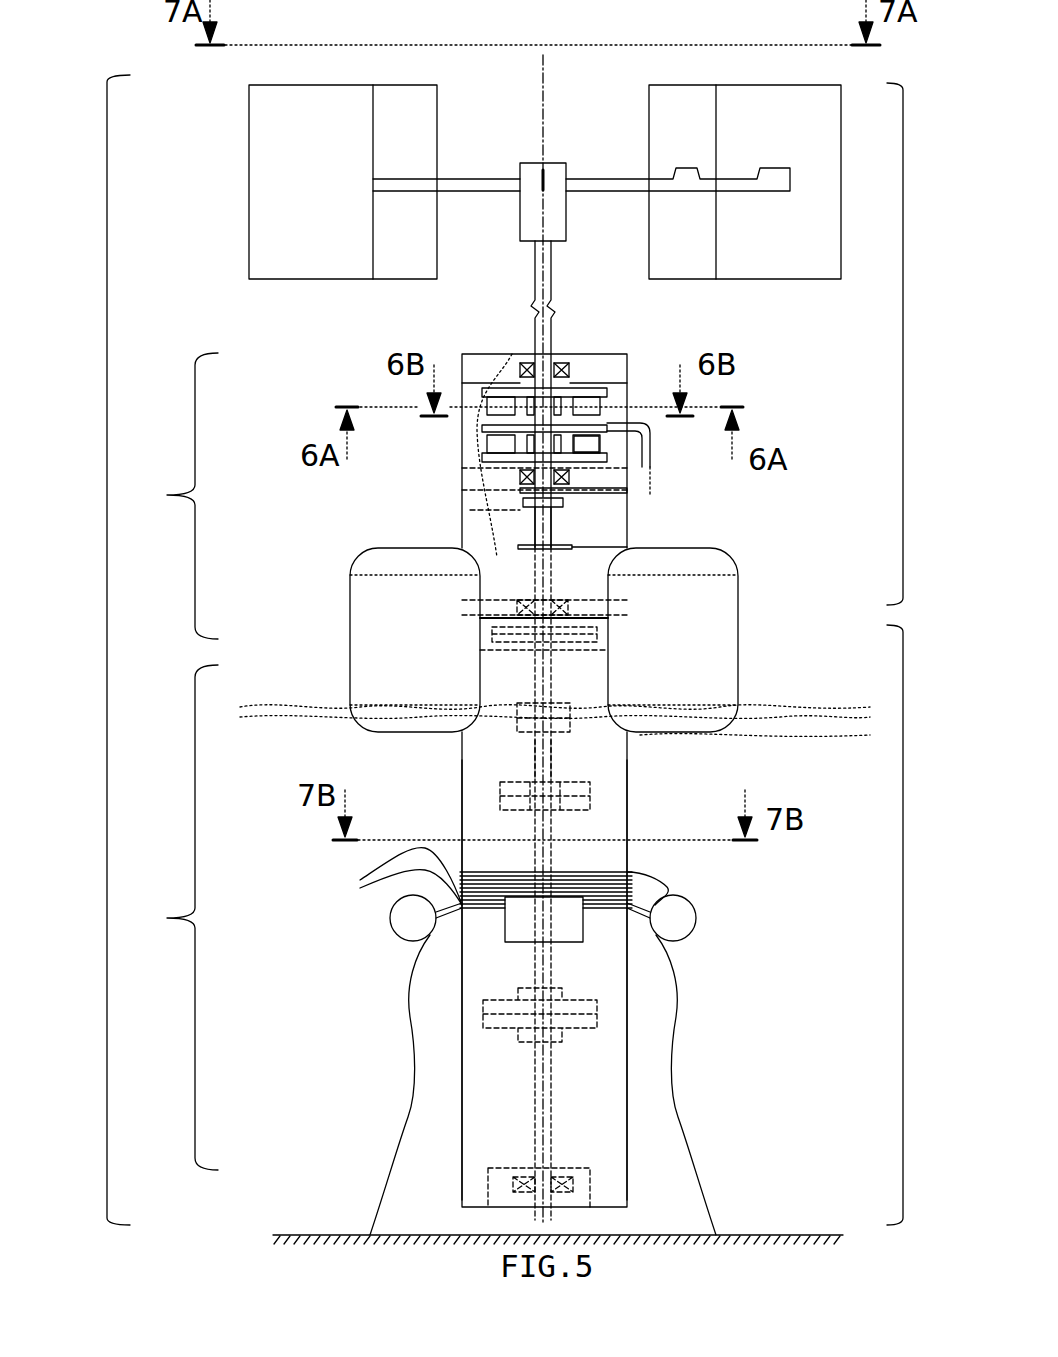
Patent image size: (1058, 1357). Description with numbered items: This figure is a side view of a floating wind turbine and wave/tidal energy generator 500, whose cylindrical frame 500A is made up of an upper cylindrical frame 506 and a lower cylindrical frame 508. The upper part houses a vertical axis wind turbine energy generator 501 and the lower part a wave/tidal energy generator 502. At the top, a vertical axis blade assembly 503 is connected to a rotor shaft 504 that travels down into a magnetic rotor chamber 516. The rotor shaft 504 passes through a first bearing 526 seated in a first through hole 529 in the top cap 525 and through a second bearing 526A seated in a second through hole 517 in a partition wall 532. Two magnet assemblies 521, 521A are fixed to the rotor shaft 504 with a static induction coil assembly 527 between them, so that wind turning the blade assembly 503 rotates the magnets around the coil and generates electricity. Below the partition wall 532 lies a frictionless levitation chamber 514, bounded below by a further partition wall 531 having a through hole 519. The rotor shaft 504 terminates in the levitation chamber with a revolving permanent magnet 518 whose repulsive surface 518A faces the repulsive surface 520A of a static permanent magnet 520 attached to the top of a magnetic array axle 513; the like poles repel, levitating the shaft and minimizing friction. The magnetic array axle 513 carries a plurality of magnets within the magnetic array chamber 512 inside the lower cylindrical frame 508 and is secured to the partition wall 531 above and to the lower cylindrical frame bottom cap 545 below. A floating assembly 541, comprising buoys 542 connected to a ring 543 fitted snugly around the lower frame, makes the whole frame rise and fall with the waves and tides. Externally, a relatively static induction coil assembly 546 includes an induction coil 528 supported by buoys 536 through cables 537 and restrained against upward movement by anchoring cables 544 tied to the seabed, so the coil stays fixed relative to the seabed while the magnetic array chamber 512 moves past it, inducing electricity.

The wind turbine and wave/tidal energy generator 500 is at (105, 650).
The cylindrical frame 500A is at (447, 832).
The vertical axis wind turbine energy generator 501 is at (906, 343).
The wave/tidal energy generator 502 is at (906, 925).
The vertical axis blade assembly 503 is at (590, 160).
The rotor shaft 504 is at (545, 292).
The upper cylindrical frame 506 is at (176, 496).
The lower cylindrical frame 508 is at (176, 917).
The magnetic array chamber 512 is at (617, 790).
The magnetic array axle 513 is at (560, 758).
The frictionless levitation chamber 514 is at (600, 515).
The magnetic rotor chamber 516 is at (614, 447).
The second through hole 517 is at (598, 494).
The revolving permanent magnet 518 is at (523, 504).
The repulsive surface 518A is at (532, 510).
The through hole 519 is at (610, 603).
The static permanent magnet 520 is at (555, 547).
The repulsive surface 520A is at (622, 527).
The magnet assembly 521 is at (473, 403).
The magnet assembly 521A is at (470, 447).
The top cap 525 is at (605, 372).
The first bearing 526 is at (567, 366).
The second bearing 526A is at (527, 478).
The static induction coil assembly 527 is at (470, 428).
The induction coil 528 is at (600, 872).
The first through hole 529 is at (525, 360).
The partition wall 531 is at (490, 607).
The partition wall 532 is at (600, 483).
The buoys 536 is at (685, 921).
The cables 537 is at (665, 888).
The floating assembly 541 is at (760, 573).
The buoys 542 is at (697, 625).
The ring 543 is at (600, 633).
The anchoring cables 544 is at (662, 1047).
The lower cylindrical frame bottom cap 545 is at (555, 1203).
The relatively static induction coil assembly 546 is at (690, 885).